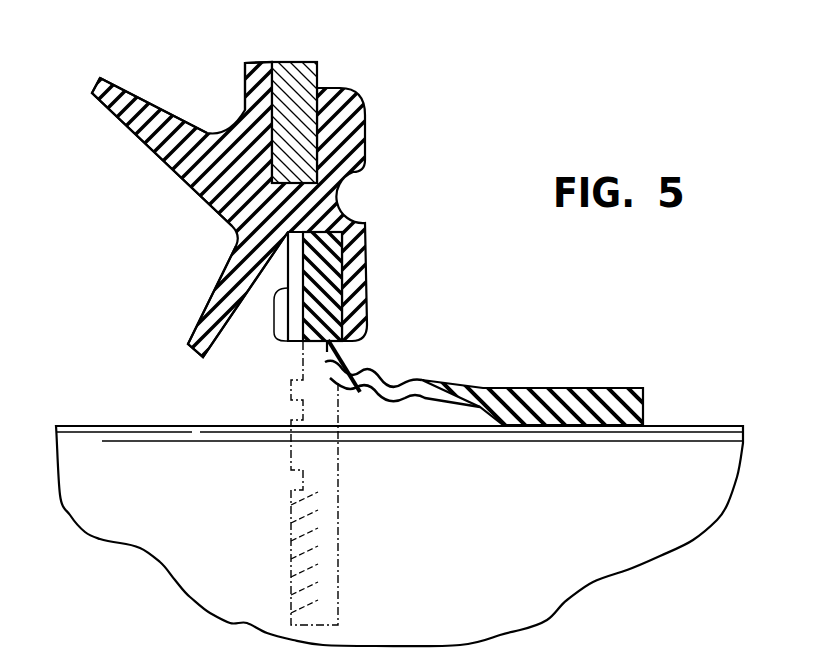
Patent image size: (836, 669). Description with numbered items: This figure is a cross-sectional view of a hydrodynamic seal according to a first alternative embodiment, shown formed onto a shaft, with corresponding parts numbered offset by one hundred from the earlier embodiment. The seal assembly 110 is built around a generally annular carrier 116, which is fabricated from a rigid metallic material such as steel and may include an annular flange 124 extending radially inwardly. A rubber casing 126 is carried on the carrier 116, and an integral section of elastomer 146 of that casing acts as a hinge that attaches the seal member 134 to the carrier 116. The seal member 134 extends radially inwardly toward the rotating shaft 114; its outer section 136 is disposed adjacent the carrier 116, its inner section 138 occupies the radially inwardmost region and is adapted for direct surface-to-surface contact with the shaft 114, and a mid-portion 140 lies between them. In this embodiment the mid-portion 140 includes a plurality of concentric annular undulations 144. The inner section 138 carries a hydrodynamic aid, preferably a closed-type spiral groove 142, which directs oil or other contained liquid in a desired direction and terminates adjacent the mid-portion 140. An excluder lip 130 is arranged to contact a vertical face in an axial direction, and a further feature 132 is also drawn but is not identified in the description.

The seal assembly 110 is at (141, 38).
The rotating shaft 114 is at (714, 426).
The carrier 116 is at (294, 62).
The annular flange 124 is at (318, 72).
The rubber casing 126 is at (253, 62).
The excluder lip 130 is at (92, 88).
The lower arm 132 is at (187, 343).
The seal member 134 is at (652, 381).
The outer section 136 is at (274, 340).
The inner section 138 is at (642, 368).
The mid-portion 140 is at (380, 356).
The hydrodynamic groove 142 is at (590, 426).
The concentric annular undulations 144 is at (337, 407).
The section of elastomer 146 is at (370, 262).